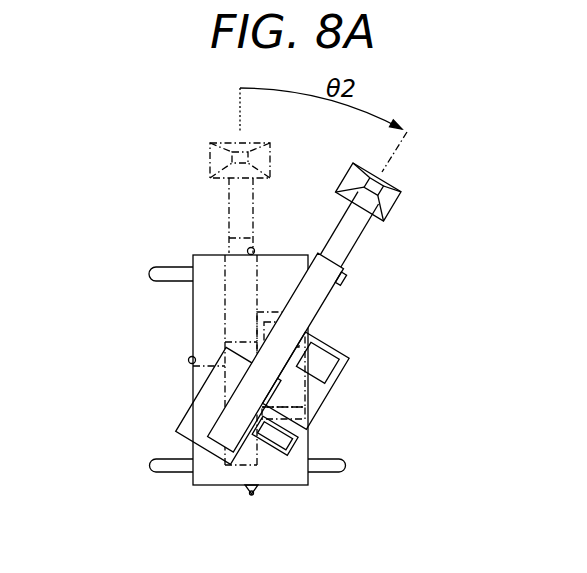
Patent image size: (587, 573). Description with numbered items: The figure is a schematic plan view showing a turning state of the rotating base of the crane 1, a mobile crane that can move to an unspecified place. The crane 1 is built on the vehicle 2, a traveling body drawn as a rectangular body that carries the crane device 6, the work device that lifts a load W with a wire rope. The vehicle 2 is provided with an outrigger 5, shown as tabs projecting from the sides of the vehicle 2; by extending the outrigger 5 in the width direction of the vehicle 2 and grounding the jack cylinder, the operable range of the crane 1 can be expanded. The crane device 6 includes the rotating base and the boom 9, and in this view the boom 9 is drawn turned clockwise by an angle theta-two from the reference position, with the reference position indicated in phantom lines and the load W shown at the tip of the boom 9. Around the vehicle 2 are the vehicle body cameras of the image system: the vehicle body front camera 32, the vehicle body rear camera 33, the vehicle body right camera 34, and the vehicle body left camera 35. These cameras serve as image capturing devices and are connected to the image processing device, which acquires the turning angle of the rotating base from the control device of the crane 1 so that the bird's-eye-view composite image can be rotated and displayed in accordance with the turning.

The crane 1 is at (57, 122).
The vehicle 2 is at (160, 324).
The outrigger 5 is at (164, 266).
The crane device 6 is at (176, 416).
The boom 9 is at (372, 253).
The vehicle body front camera 32 is at (253, 249).
The vehicle body rear camera 33 is at (250, 496).
The vehicle body right camera 34 is at (333, 361).
The vehicle body left camera 35 is at (189, 360).
The load W is at (395, 204).